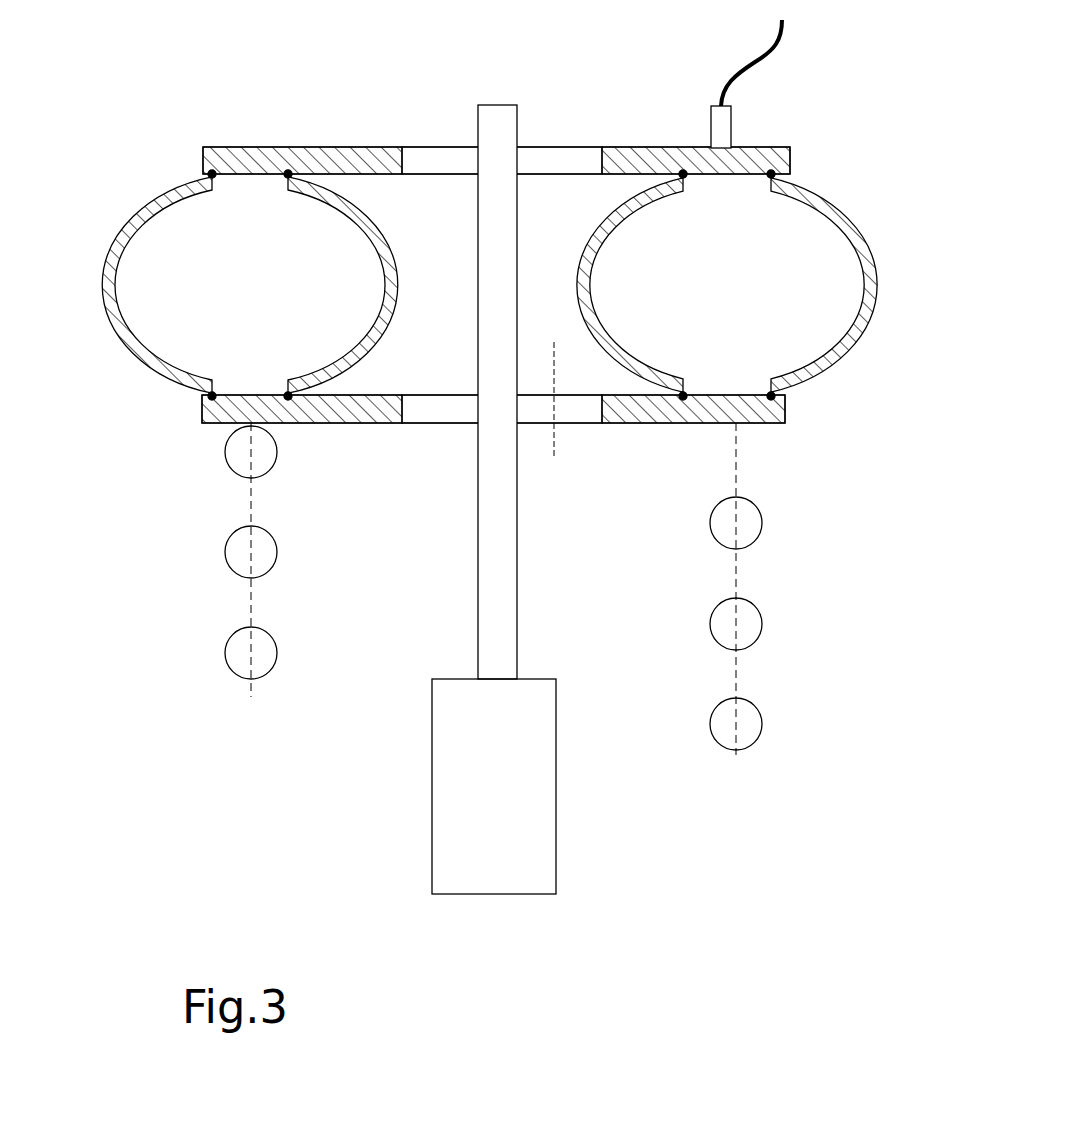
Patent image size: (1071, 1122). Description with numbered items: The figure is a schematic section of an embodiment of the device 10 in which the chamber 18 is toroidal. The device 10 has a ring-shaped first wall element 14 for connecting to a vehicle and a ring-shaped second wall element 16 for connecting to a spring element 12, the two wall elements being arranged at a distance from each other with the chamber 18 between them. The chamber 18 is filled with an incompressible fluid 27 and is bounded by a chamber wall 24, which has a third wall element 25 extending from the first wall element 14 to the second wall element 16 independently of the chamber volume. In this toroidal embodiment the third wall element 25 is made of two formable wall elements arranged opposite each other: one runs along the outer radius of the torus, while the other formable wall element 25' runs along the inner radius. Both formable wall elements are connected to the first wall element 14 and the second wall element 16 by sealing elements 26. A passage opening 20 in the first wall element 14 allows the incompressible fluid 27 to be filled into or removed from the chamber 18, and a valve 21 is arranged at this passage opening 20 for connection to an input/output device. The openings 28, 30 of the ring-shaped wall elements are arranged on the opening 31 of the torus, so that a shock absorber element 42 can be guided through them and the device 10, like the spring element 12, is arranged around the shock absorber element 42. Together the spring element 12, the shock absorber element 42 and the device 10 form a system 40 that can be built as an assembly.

The device 10 is at (108, 92).
The spring element 12 is at (225, 550).
The first wall element 14 is at (330, 147).
The second wall element 16 is at (202, 410).
The chamber 18 is at (231, 280).
The passage opening 20 is at (722, 180).
The valve 21 is at (733, 126).
The chamber wall 24 is at (135, 342).
The third wall element 25 is at (144, 280).
The formable wall element 25' is at (358, 285).
The sealing element 26 is at (208, 172).
The incompressible fluid 27 is at (264, 329).
The opening 28 is at (425, 165).
The opening 30 is at (425, 420).
The opening of the torus 31 is at (556, 420).
The system 40 is at (732, 840).
The shock absorber element 42 is at (538, 771).